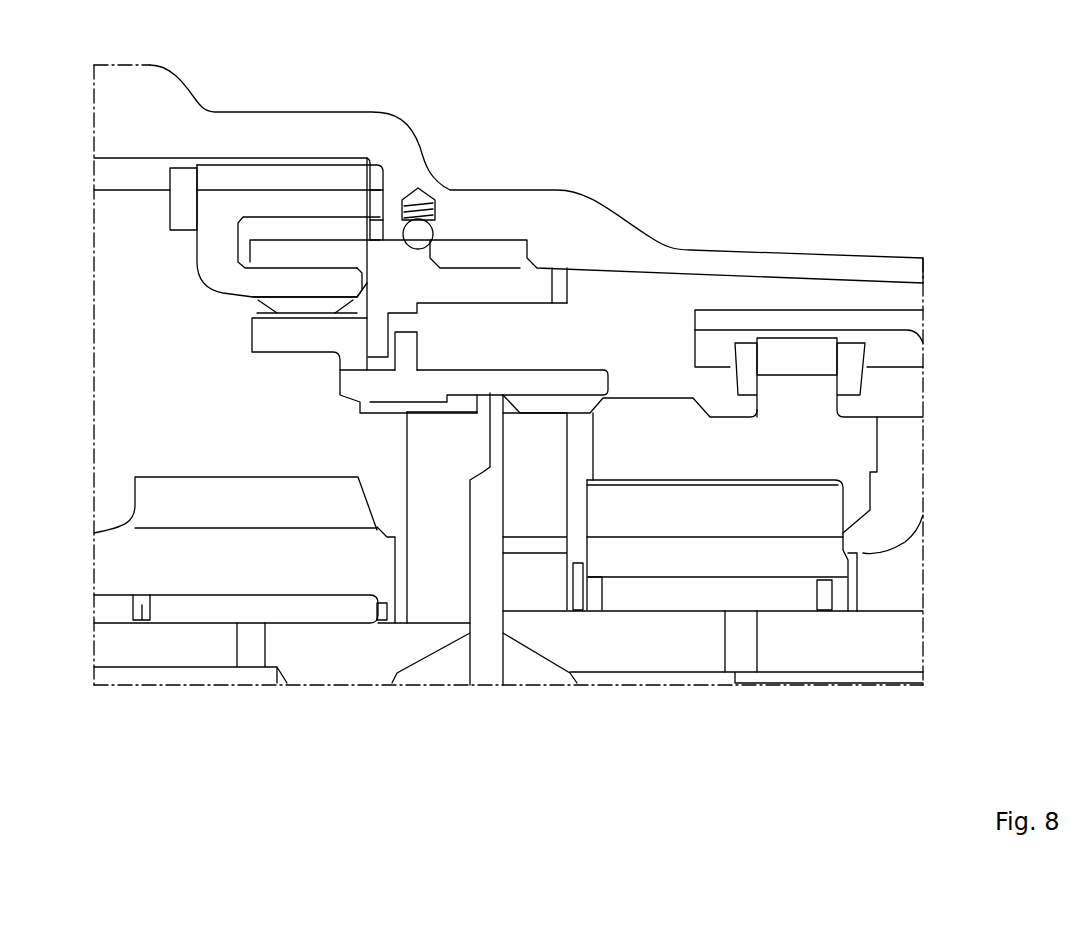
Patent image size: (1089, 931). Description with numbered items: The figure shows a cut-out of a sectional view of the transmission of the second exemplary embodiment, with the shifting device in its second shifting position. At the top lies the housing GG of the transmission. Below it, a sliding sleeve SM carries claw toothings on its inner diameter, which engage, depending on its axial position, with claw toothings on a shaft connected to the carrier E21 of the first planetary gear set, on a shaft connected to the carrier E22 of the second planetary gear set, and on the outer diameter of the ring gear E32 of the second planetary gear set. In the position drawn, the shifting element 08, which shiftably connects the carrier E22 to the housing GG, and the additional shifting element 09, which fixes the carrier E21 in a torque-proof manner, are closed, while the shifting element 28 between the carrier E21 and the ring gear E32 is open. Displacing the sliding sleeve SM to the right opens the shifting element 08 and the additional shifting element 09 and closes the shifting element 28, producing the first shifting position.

The housing GG is at (245, 140).
The shifting element 08 is at (302, 290).
The additional shifting element 09 is at (432, 360).
The sliding sleeve SM is at (577, 380).
The shifting element 28 is at (643, 390).
The carrier of the first planetary gear set E21 is at (340, 650).
The ring gear of the second planetary gear set E32 is at (788, 457).
The carrier of the second planetary gear set E22 is at (850, 650).